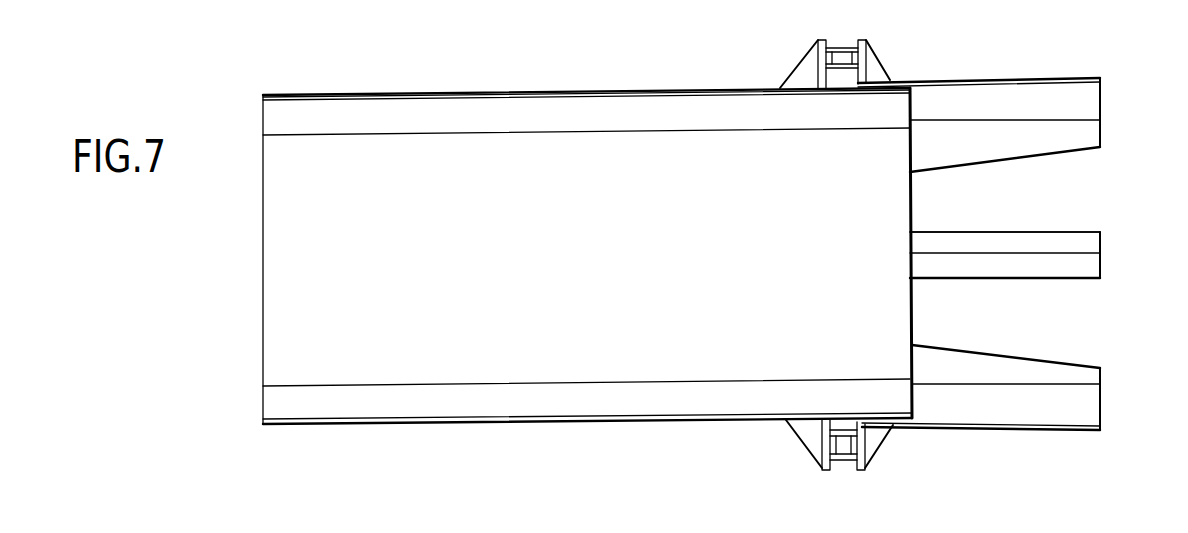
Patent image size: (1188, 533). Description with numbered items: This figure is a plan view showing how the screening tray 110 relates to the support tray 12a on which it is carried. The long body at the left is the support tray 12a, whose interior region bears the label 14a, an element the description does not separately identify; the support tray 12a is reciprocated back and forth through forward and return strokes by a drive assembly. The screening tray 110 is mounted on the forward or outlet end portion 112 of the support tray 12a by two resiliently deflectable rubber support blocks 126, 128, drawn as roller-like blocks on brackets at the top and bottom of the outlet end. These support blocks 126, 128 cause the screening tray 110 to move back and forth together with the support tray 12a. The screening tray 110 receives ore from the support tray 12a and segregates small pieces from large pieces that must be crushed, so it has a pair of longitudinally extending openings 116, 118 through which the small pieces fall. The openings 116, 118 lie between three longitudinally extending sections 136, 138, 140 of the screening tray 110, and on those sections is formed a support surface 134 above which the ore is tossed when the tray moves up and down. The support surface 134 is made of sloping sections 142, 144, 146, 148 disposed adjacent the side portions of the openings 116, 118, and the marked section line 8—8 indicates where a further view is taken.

The section line 8- 8 is at (843, 268).
The support tray 12a is at (670, 88).
The box beam 14a is at (500, 278).
The screening tray 110 is at (1005, 76).
The forward or outlet end portion 112 is at (787, 420).
The longitudinally extending opening 116 is at (1036, 208).
The longitudinally extending opening 118 is at (983, 330).
The resiliently deflectable rubber support block 126 is at (843, 452).
The resiliently deflectable rubber support block 128 is at (843, 50).
The support surface 134 is at (1029, 136).
The longitudinally extending section 136 is at (1048, 92).
The longitudinally extending section 138 is at (1100, 270).
The longitudinally extending section 140 is at (1104, 406).
The sloping section 142 is at (940, 156).
The sloping section 144 is at (1090, 230).
The sloping section 146 is at (1046, 266).
The sloping section 148 is at (1058, 374).